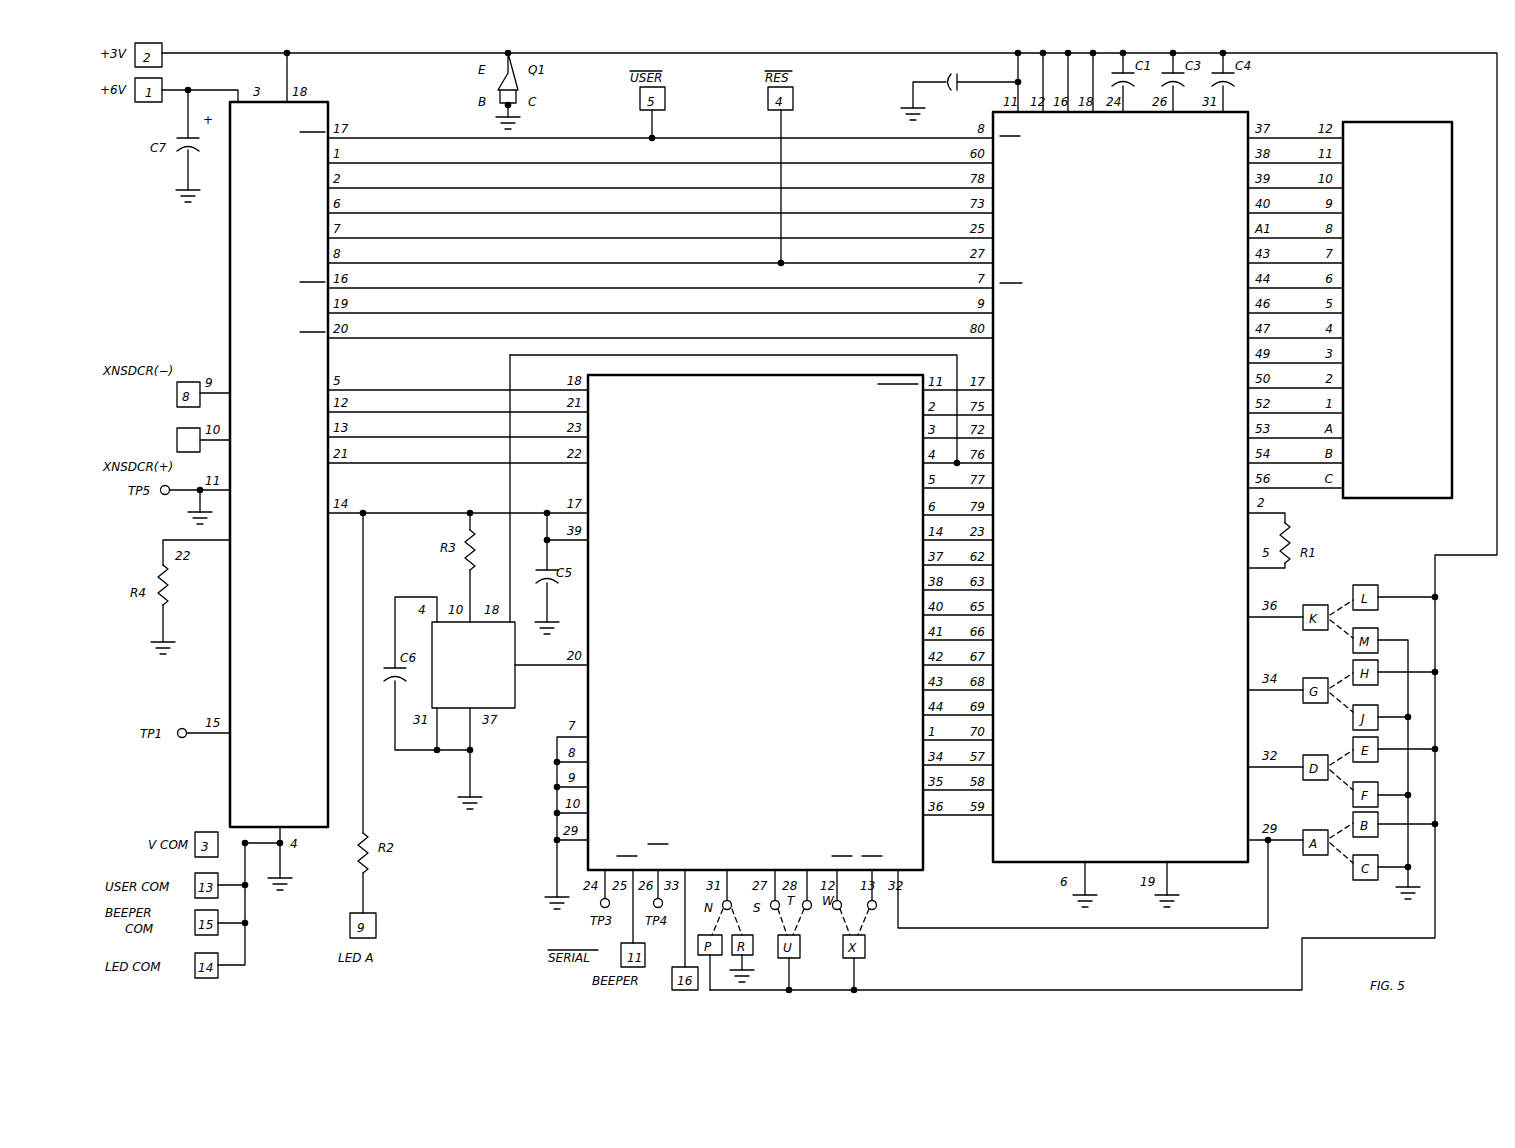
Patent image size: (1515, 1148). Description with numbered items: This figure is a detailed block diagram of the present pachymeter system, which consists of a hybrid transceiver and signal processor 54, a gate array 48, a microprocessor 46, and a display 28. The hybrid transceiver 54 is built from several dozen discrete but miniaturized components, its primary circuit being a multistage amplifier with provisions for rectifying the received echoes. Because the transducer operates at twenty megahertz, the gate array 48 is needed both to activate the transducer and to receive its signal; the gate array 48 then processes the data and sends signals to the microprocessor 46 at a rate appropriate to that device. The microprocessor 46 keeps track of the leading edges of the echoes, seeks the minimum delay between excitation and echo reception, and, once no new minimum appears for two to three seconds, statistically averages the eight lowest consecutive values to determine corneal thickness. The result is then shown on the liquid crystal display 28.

The hybrid transceiver and signal processor 54 is at (294, 600).
The gate array 48 is at (746, 597).
The microprocessor 46 is at (1123, 409).
The display 28 is at (1411, 316).